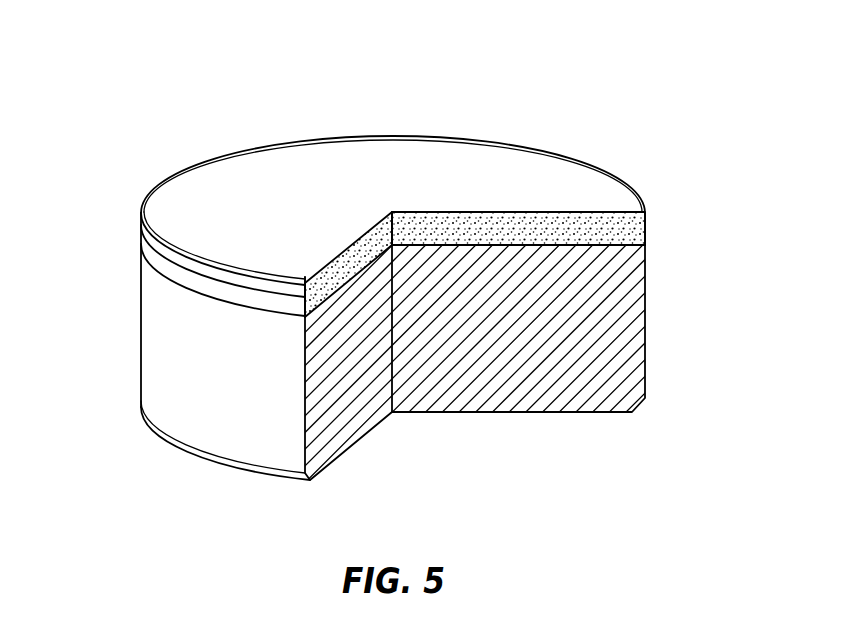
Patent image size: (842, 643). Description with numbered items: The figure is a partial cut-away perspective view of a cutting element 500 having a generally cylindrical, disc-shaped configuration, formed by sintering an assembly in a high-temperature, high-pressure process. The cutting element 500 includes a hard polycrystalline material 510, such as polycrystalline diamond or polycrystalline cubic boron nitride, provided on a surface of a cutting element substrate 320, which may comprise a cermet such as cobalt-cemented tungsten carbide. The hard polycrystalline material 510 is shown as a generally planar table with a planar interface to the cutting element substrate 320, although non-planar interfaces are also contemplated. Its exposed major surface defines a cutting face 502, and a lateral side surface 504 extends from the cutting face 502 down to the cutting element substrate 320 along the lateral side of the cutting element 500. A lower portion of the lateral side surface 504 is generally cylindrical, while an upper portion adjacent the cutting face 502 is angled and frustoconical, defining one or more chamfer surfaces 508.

The cutting element 500 is at (196, 103).
The cutting face 502 is at (488, 160).
The lateral side surface 504 is at (647, 232).
The chamfer surfaces 508 is at (143, 216).
The hard polycrystalline material 510 is at (568, 180).
The cutting element substrate 320 is at (620, 318).